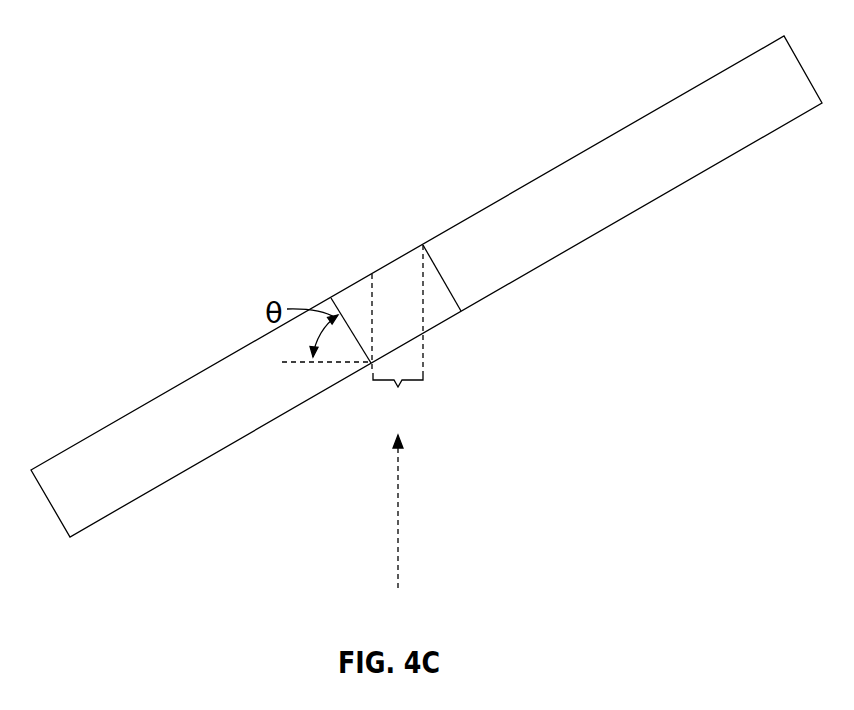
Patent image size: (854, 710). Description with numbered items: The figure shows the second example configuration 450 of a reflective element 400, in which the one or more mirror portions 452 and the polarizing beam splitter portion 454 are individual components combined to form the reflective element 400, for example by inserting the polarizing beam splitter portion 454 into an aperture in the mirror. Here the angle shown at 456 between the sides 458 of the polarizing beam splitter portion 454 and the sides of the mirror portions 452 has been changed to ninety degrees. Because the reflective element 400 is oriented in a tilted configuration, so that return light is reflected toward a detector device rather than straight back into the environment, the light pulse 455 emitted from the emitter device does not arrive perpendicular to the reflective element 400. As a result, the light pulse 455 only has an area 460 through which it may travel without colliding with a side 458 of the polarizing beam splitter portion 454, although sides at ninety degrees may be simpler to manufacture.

The reflective element 400 is at (117, 288).
The second example configuration 450 is at (117, 345).
The mirror portions 452 is at (672, 114).
The polarizing beam splitter portion 454 is at (403, 283).
The light pulse 455 is at (407, 498).
The angle 456 is at (362, 355).
The sides 458 is at (455, 275).
The area 460 is at (397, 334).